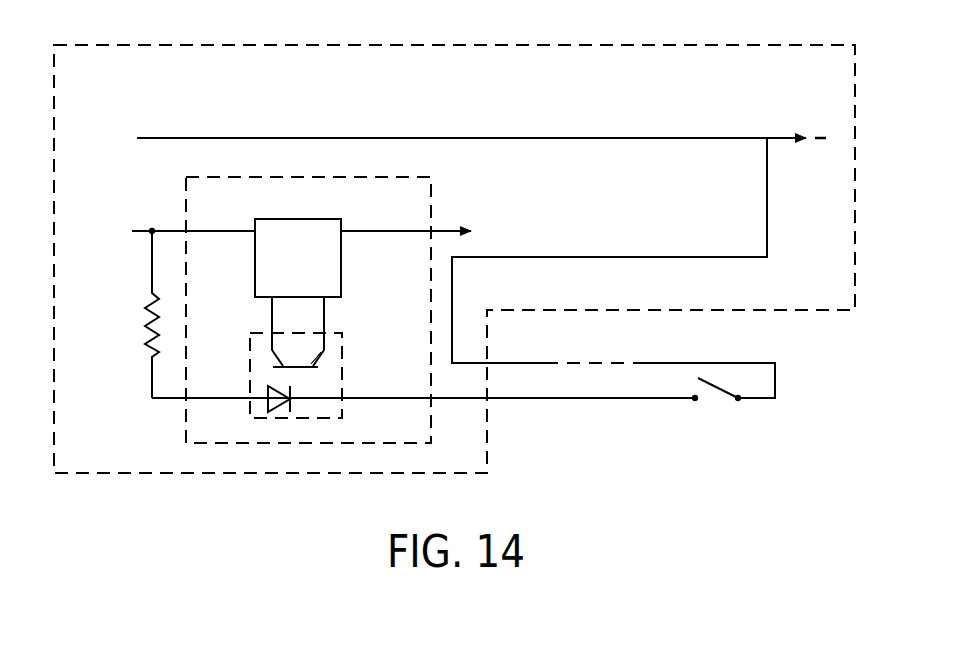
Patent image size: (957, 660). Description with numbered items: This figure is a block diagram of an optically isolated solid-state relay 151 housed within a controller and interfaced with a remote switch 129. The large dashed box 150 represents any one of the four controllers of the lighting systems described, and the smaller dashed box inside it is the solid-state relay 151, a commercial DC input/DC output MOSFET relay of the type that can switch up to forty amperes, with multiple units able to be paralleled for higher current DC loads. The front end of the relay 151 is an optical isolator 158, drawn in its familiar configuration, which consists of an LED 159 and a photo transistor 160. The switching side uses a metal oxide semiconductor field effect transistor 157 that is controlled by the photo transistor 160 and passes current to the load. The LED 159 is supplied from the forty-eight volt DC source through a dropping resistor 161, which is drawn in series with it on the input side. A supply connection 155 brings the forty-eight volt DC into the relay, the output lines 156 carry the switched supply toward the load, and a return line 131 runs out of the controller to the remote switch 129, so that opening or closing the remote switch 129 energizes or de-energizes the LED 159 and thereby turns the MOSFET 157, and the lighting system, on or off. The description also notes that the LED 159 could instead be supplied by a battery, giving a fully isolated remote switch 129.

The large dashed box 150 is at (658, 45).
The solid-state relay 151 is at (432, 191).
The 48V supply input 155 is at (133, 189).
The load supply lines 156 is at (710, 138).
The metal oxide semiconductor field effect transistor 157 is at (341, 266).
The optical isolator 158 is at (335, 333).
The LED 159 is at (268, 405).
The photo transistor 160 is at (332, 362).
The dropping resistor 161 is at (143, 336).
The return wire 131 is at (645, 362).
The remote switch 129 is at (712, 406).